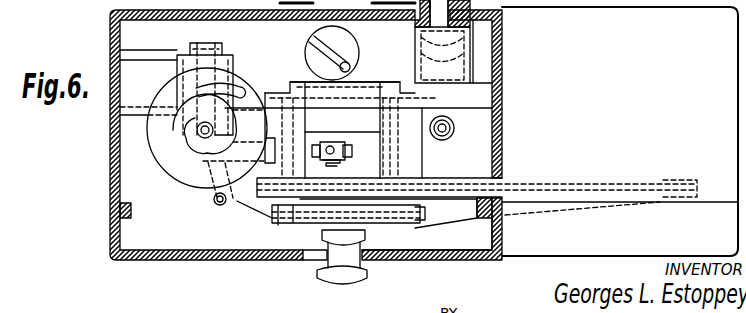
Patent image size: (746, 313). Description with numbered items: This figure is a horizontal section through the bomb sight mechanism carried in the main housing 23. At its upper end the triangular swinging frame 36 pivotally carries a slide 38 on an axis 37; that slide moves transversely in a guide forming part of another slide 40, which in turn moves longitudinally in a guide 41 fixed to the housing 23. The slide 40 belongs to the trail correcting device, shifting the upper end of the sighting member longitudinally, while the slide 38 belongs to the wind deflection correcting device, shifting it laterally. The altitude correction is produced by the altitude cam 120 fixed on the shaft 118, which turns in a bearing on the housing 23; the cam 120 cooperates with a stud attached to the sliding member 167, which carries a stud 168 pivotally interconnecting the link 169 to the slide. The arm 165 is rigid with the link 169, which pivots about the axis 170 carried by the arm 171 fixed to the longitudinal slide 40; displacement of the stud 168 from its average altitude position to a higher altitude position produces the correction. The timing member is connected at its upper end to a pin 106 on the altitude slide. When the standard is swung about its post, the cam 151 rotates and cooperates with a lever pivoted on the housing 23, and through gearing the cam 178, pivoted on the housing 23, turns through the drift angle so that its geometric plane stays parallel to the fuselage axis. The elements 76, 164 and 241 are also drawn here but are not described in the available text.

The main housing 23 is at (503, 147).
The triangular swinging frame 36 is at (443, 220).
The axis 37 is at (303, 213).
The slide 38 is at (370, 82).
The slide 40 is at (341, 132).
The guide 41 is at (427, 178).
The bushing 76 is at (444, 133).
The pin 106 is at (334, 166).
The shaft 118 is at (190, 150).
The altitude cam 120 is at (243, 90).
The cam 151 is at (423, 58).
The roller 164 is at (222, 208).
The arm 165 is at (208, 176).
The sliding member 167 is at (222, 44).
The stud 168 is at (144, 152).
The link 169 is at (194, 128).
The axis 170 is at (195, 176).
The arm 171 is at (240, 205).
The cam 178 is at (347, 38).
The rod 241 is at (388, 5).